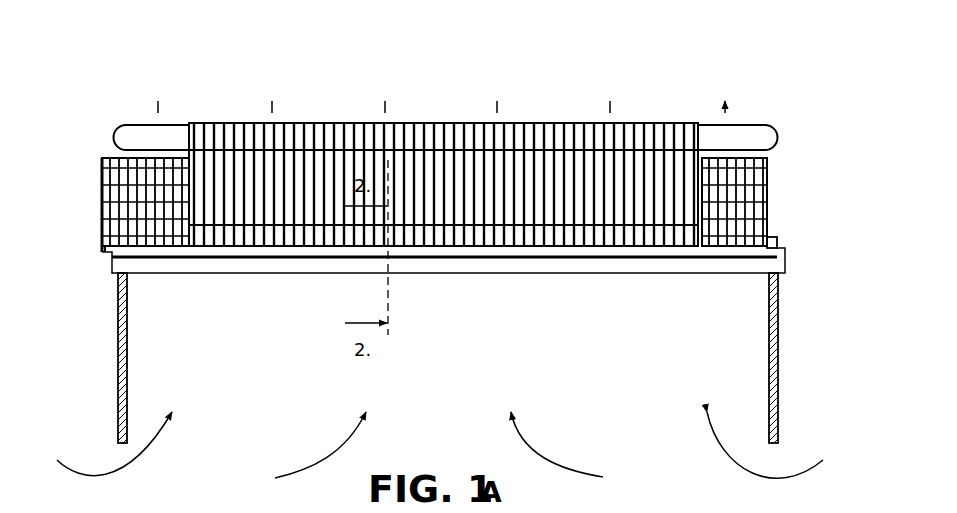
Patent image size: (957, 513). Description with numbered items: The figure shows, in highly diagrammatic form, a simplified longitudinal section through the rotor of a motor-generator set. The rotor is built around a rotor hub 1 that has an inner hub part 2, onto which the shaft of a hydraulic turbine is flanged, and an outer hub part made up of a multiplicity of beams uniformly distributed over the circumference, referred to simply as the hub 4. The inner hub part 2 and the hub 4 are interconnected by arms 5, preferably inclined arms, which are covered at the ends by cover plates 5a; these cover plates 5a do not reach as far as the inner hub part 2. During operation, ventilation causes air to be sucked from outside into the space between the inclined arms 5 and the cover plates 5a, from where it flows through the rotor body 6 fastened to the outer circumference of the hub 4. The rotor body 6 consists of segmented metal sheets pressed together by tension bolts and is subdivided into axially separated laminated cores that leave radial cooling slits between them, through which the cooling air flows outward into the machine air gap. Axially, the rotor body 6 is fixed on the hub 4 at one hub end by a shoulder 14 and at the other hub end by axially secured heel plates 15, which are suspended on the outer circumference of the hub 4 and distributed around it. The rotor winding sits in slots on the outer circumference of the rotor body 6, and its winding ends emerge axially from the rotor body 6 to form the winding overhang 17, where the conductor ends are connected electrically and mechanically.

The rotor hub 1 is at (816, 416).
The inner hub part 2 is at (796, 462).
The hub 4 is at (753, 266).
The arms 5 is at (775, 341).
The cover plates 5a is at (117, 398).
The rotor body 6 is at (318, 200).
The shoulder 14 is at (113, 246).
The heel plates 15 is at (773, 242).
The winding overhang 17 is at (129, 130).